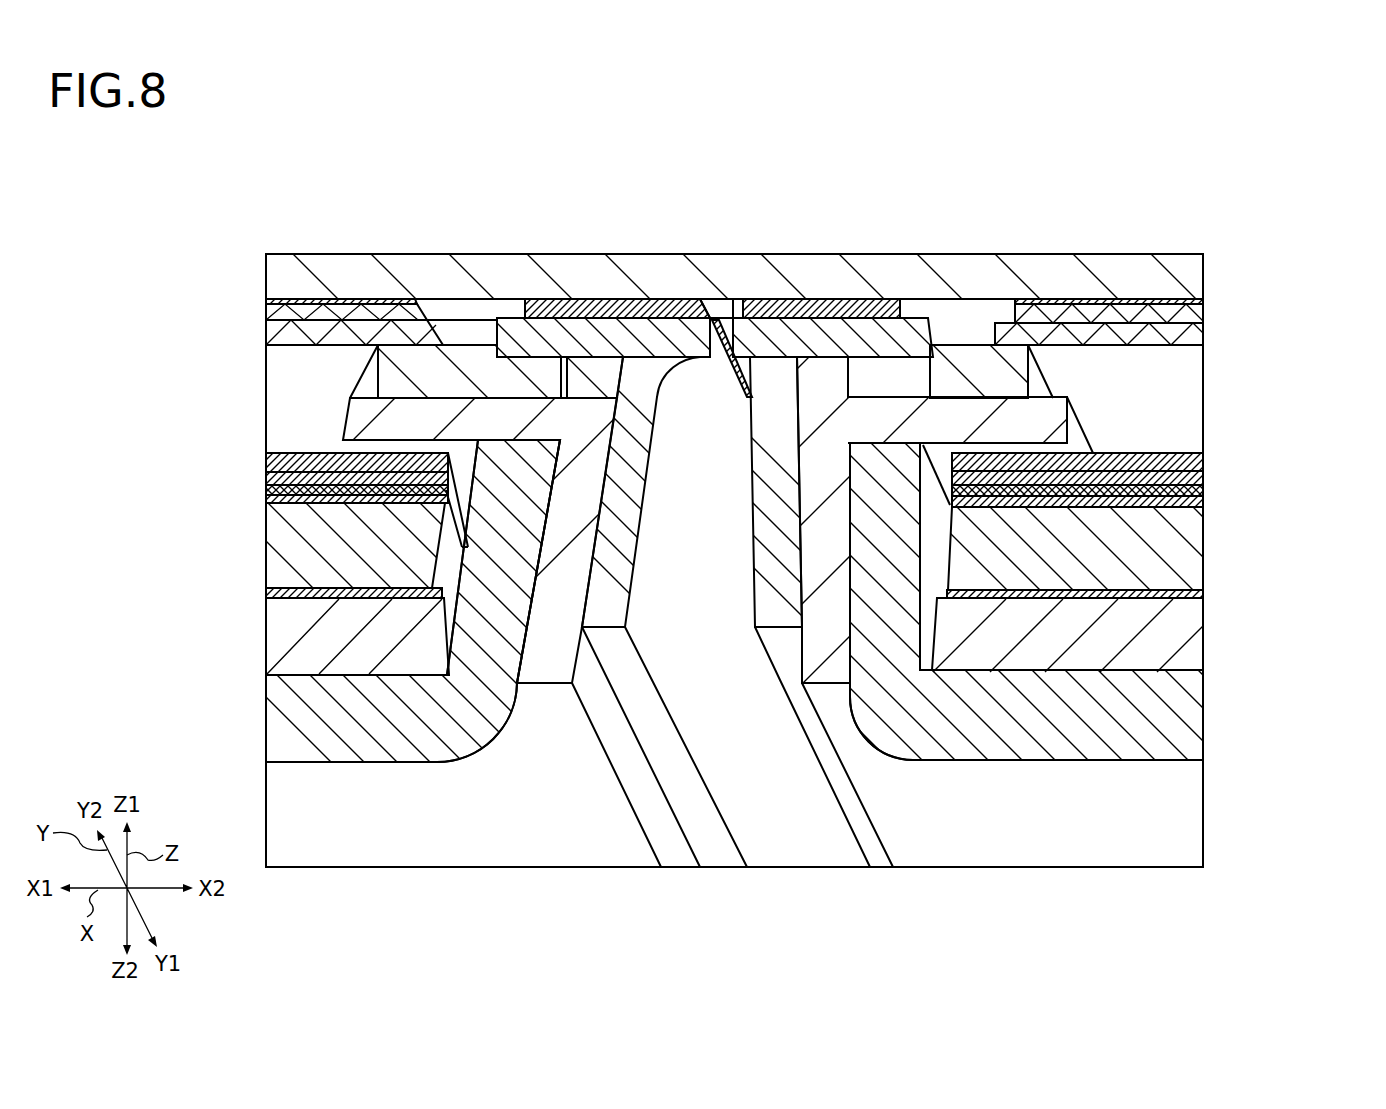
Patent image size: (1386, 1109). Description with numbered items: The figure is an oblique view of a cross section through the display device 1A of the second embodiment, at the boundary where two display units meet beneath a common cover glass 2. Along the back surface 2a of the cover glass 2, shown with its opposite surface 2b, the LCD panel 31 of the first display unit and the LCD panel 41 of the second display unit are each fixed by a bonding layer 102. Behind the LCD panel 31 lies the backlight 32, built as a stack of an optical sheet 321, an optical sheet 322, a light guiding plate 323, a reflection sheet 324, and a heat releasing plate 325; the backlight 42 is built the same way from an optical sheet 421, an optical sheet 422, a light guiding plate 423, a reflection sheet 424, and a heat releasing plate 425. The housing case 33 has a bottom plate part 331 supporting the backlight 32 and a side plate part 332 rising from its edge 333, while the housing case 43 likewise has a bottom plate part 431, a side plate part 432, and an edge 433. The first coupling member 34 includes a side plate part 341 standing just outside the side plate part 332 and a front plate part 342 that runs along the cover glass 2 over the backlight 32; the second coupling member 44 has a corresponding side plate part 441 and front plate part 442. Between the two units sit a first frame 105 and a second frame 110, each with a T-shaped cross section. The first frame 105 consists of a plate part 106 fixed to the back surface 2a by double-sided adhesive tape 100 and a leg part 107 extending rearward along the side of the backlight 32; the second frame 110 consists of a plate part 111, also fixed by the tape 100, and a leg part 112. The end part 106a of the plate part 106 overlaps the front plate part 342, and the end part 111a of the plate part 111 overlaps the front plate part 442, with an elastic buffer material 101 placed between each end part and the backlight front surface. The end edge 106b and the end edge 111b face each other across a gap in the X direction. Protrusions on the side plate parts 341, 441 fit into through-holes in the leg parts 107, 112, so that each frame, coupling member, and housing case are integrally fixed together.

The display device 1A is at (760, 128).
The cover glass 2 is at (729, 520).
The back surface of the cover glass 2a is at (445, 312).
The second surface of substrate 2b is at (283, 253).
The liquid crystal display panel 31 is at (250, 300).
The backlight 32 is at (693, 482).
The housing case 33 is at (552, 675).
The first coupling member 34 is at (486, 529).
The LCD panel 41 is at (1206, 300).
The backlight 42 is at (693, 481).
The housing case 43 is at (925, 670).
The second coupling member 44 is at (904, 536).
The double-sided adhesive tape 100 is at (650, 300).
The elastic buffer material 101 is at (383, 372).
The bonding layer 102 is at (368, 296).
The first frame 105 is at (692, 591).
The plate part 106 is at (693, 394).
The end part 106a is at (570, 330).
The end edge 106b is at (746, 335).
The leg part 107 is at (603, 603).
The second frame 110 is at (810, 591).
The plate part 111 is at (813, 252).
The end part 111a is at (917, 330).
The end edge 111b is at (712, 315).
The leg part 112 is at (778, 600).
The optical sheet 321 is at (268, 462).
The optical sheet 322 is at (268, 490).
The light guiding plate 323 is at (268, 540).
The reflection sheet 324 is at (268, 594).
The heat releasing plate 325 is at (300, 636).
The bottom plate part 331 is at (290, 742).
The side plate part 332 is at (487, 562).
The edge 333 is at (470, 720).
The side plate part 341 is at (550, 660).
The front plate part 342 is at (360, 413).
The optical sheet 421 is at (1200, 462).
The optical sheet 422 is at (1200, 490).
The light guiding plate 423 is at (1200, 540).
The reflection sheet 424 is at (1200, 594).
The heat releasing plate 425 is at (1121, 635).
The bottom plate part 431 is at (1180, 740).
The side plate part 432 is at (873, 558).
The edge 433 is at (880, 730).
The side plate part 441 is at (845, 657).
The front plate part 442 is at (1047, 412).